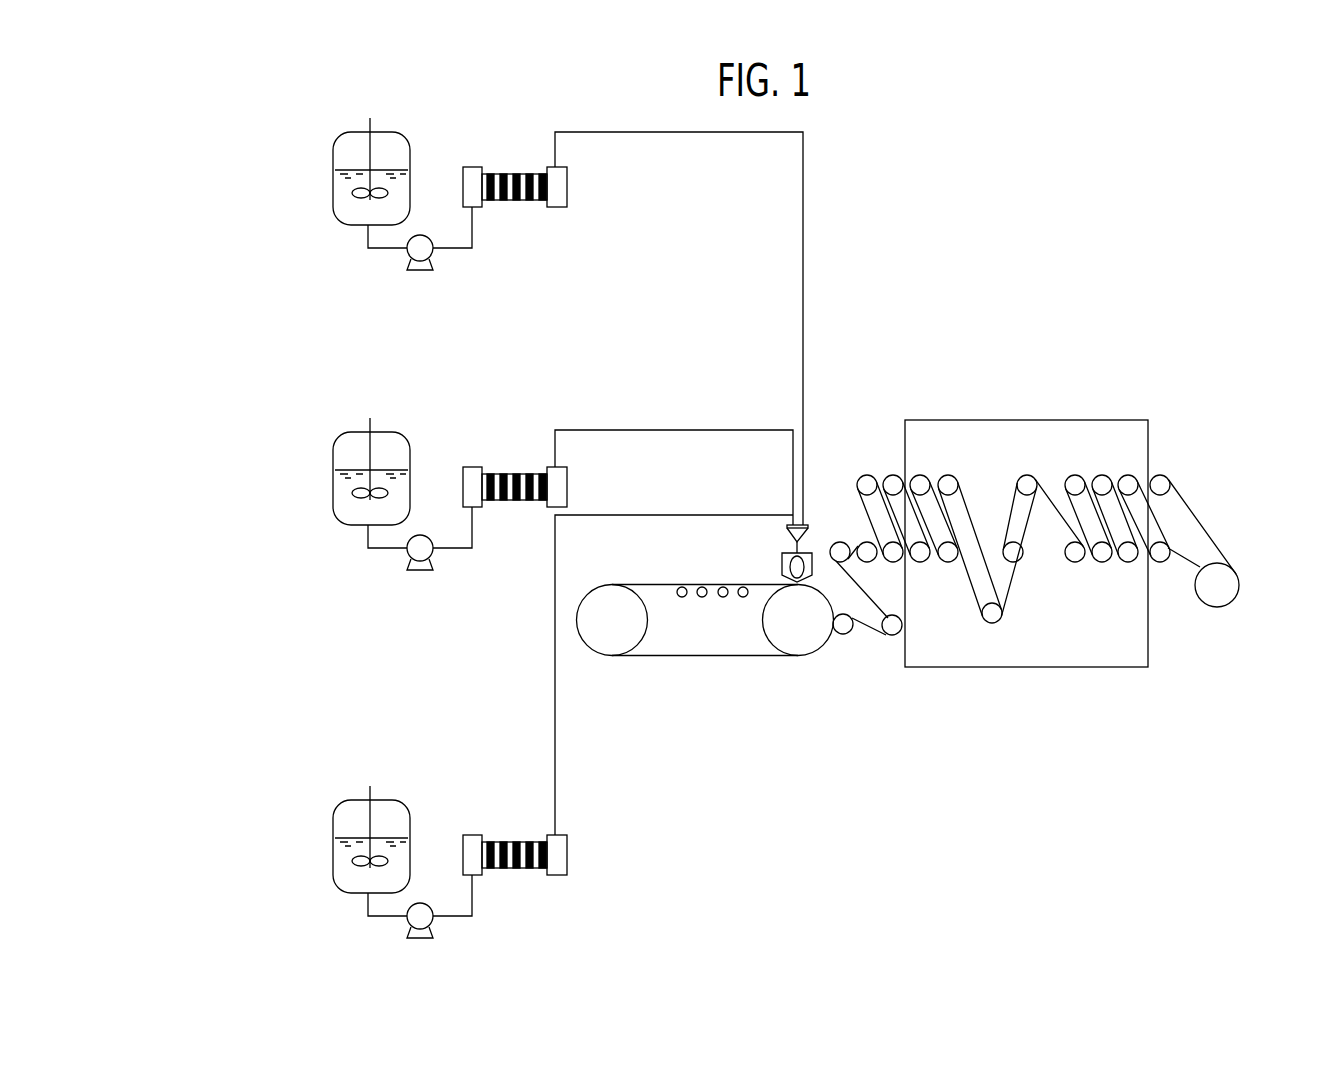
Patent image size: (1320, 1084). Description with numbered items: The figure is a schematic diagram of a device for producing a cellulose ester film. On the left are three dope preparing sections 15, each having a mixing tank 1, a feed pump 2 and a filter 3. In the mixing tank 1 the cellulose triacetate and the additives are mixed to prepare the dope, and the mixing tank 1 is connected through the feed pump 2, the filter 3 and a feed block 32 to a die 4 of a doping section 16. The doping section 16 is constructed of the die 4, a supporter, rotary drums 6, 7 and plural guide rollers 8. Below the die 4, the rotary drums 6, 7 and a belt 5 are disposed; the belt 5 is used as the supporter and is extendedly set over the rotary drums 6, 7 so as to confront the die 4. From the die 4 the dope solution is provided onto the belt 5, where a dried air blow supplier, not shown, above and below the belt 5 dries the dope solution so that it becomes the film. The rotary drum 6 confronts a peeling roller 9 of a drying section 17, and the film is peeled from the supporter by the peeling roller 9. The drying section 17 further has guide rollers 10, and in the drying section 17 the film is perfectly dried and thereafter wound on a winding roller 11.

The mixing tank 1 is at (387, 131).
The feed pump 2 is at (426, 272).
The filter 3 is at (474, 167).
The die 4 is at (812, 553).
The belt 5 is at (660, 587).
The rotary drum 6 is at (820, 657).
The rotary drum 7 is at (590, 655).
The guide rollers 8 is at (745, 597).
The peeling roller 9 is at (855, 634).
The guide rollers 10 is at (868, 476).
The winding roller 11 is at (1233, 608).
The dope preparing section 15 is at (483, 505).
The doping section 16 is at (705, 728).
The drying section 17 is at (1033, 609).
The feed block 32 is at (786, 528).